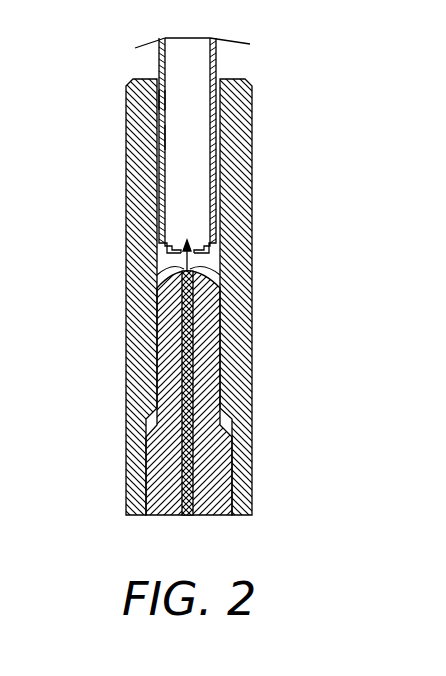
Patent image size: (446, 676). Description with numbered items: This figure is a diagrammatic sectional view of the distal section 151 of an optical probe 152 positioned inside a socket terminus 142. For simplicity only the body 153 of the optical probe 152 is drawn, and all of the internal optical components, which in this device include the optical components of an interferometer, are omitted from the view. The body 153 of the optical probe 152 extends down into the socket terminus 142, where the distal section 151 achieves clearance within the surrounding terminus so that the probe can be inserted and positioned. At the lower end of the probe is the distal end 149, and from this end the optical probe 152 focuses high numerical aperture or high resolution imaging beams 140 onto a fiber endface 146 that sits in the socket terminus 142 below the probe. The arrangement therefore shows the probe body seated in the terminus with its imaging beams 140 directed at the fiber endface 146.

The imaging beams 140 is at (184, 270).
The socket terminus 142 is at (246, 168).
The fiber endface 146 is at (178, 284).
The distal end 149 is at (176, 266).
The distal section 151 is at (162, 140).
The optical probe 152 is at (159, 100).
The body 153 is at (217, 52).